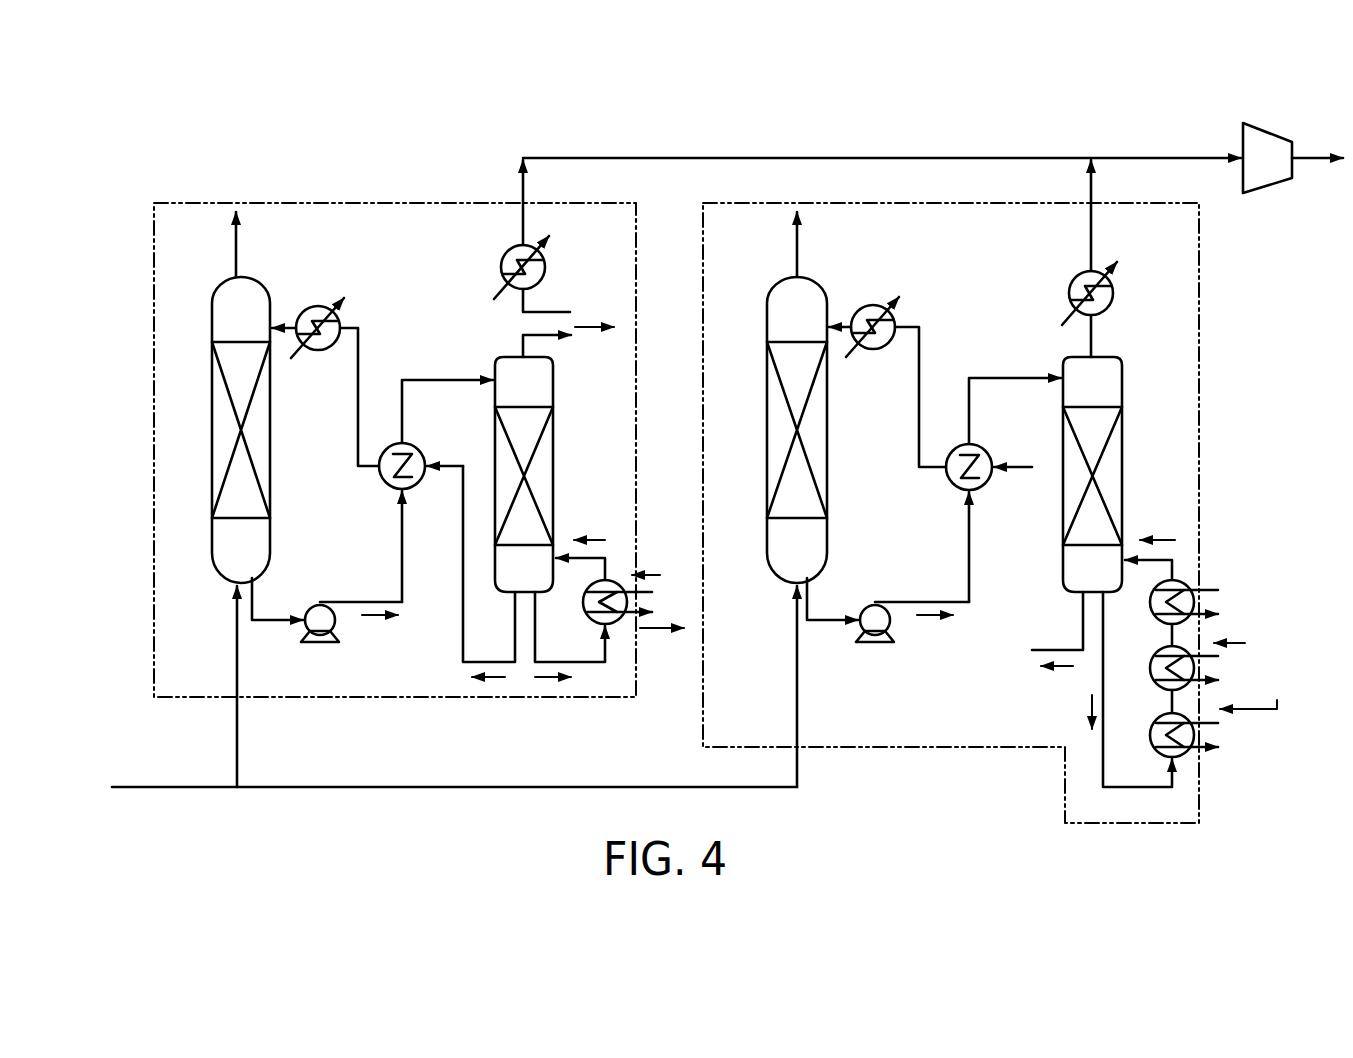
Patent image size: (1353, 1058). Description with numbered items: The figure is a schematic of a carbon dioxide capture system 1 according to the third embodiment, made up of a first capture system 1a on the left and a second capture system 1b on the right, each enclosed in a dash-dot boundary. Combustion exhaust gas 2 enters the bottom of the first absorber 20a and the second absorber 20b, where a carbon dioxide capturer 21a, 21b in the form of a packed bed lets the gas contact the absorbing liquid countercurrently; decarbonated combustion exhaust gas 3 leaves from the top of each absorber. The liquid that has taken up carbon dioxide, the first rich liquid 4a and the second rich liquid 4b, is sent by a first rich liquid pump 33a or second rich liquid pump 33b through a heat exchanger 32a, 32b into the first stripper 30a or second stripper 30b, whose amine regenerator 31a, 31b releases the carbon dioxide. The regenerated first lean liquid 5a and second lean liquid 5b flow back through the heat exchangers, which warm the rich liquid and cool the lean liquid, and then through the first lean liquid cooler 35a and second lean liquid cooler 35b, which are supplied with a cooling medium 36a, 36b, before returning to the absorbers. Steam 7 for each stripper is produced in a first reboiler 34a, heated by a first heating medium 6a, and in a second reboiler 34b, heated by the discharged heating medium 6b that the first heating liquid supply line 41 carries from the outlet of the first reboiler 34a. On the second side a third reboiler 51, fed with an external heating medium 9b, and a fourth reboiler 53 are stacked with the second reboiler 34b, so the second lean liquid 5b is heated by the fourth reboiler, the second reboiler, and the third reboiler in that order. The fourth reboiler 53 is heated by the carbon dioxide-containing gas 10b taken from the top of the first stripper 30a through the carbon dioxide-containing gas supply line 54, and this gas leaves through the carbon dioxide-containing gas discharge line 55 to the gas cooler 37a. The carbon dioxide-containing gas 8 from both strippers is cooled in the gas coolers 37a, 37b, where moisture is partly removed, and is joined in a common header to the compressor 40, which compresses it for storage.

The carbon dioxide capture system 1 is at (127, 156).
The first capture system 1a is at (150, 500).
The second capture system 1b is at (1205, 343).
The combustion exhaust gas 2 is at (224, 625).
The decarbonated combustion exhaust gas 3 is at (221, 230).
The first rich liquid 4a is at (378, 620).
The second rich liquid 4b is at (933, 620).
The first lean liquid 5a is at (548, 690).
The second lean liquid 5b is at (1090, 700).
The first heating medium 6a is at (650, 572).
The first discharged heating medium / second heating medium 6b is at (670, 625).
The steam 7 is at (598, 536).
The carbon dioxide-containing gas 8 is at (1150, 147).
The heating medium 9b is at (1205, 592).
The carbon dioxide-containing gas 10b is at (585, 322).
The first absorber 20a is at (213, 428).
The second absorber 20b is at (769, 428).
The carbon dioxide capturer 21a is at (214, 433).
The carbon dioxide capturer 21b is at (769, 433).
The first stripper 30a is at (518, 486).
The second stripper 30b is at (1086, 549).
The amine regenerator 31a is at (552, 455).
The amine regenerator 31b is at (1120, 455).
The first heat exchanger 32a is at (392, 484).
The second heat exchanger 32b is at (959, 484).
The first rich liquid pump 33a is at (315, 643).
The second rich liquid pump 33b is at (870, 643).
The first reboiler 34a is at (588, 615).
The second reboiler 34b is at (1153, 678).
The first lean liquid cooler 35a is at (325, 358).
The second lean liquid cooler 35b is at (887, 358).
The first cooling medium 36a is at (320, 365).
The cooling medium 36b is at (875, 365).
The gas cooler 37a is at (503, 262).
The gas cooler 37b is at (1071, 272).
The compressor 40 is at (1272, 122).
The first heating liquid supply line 41 is at (640, 640).
The third reboiler 51 is at (1152, 612).
The fourth reboiler 53 is at (1152, 745).
The carbon dioxide-containing gas supply line 54 is at (545, 345).
The carbon dioxide-containing gas discharge line 55 is at (545, 311).